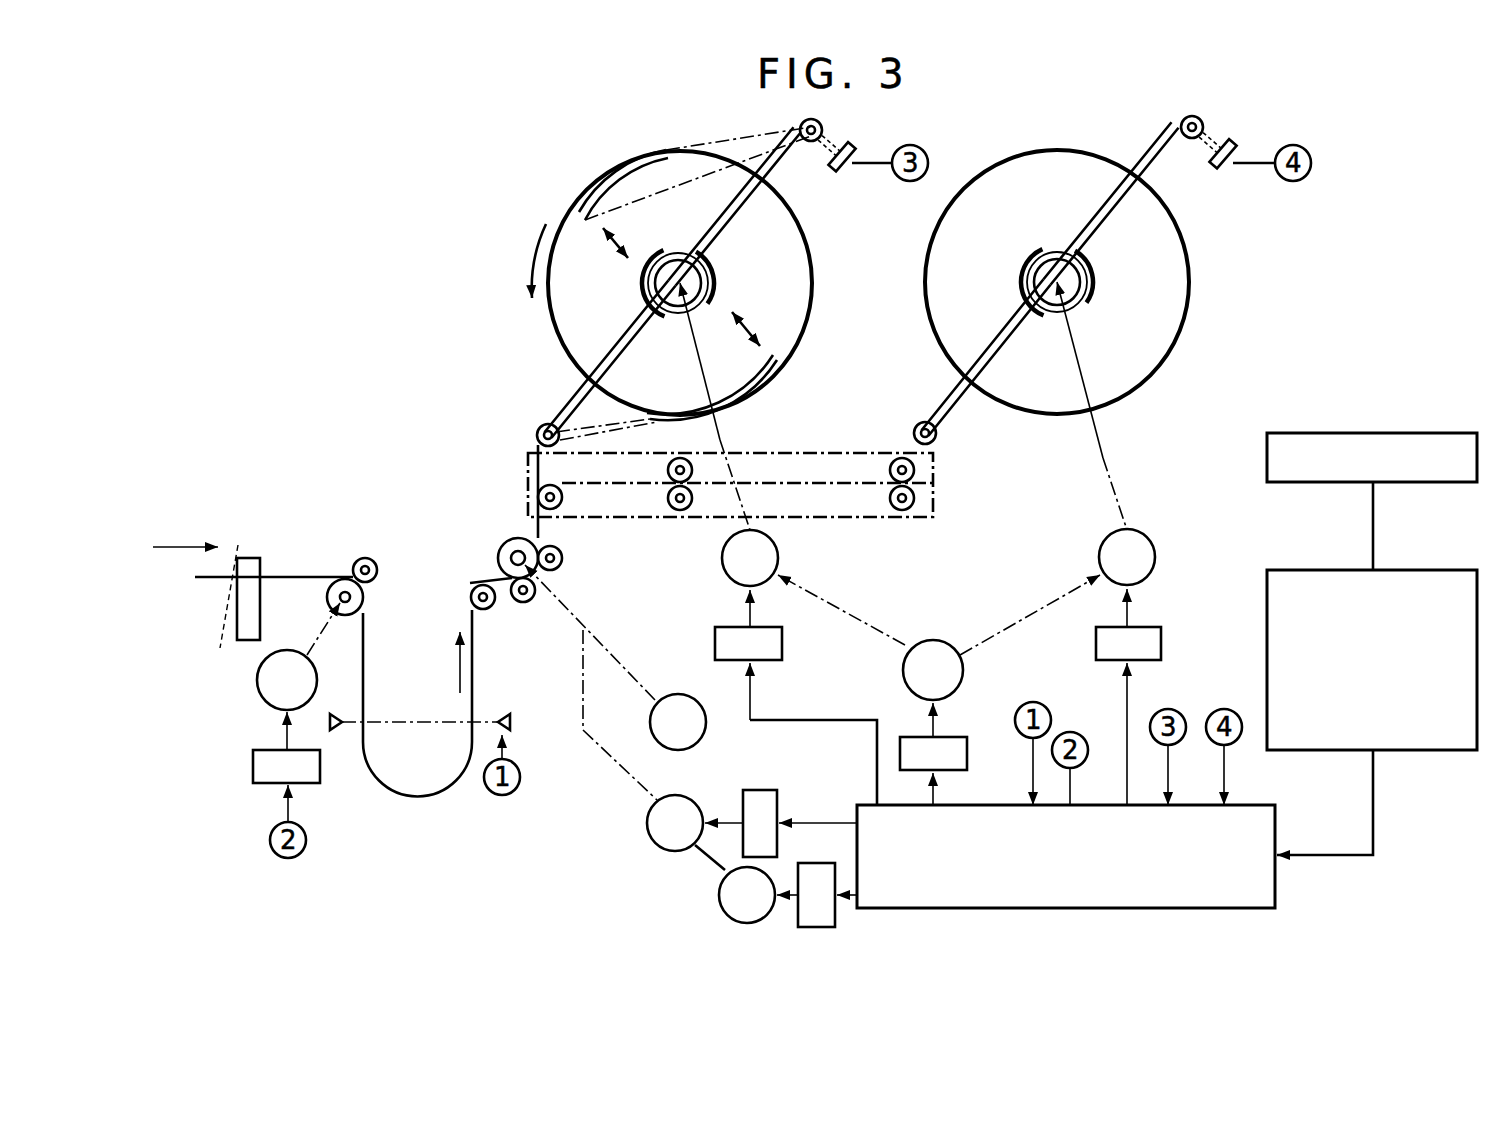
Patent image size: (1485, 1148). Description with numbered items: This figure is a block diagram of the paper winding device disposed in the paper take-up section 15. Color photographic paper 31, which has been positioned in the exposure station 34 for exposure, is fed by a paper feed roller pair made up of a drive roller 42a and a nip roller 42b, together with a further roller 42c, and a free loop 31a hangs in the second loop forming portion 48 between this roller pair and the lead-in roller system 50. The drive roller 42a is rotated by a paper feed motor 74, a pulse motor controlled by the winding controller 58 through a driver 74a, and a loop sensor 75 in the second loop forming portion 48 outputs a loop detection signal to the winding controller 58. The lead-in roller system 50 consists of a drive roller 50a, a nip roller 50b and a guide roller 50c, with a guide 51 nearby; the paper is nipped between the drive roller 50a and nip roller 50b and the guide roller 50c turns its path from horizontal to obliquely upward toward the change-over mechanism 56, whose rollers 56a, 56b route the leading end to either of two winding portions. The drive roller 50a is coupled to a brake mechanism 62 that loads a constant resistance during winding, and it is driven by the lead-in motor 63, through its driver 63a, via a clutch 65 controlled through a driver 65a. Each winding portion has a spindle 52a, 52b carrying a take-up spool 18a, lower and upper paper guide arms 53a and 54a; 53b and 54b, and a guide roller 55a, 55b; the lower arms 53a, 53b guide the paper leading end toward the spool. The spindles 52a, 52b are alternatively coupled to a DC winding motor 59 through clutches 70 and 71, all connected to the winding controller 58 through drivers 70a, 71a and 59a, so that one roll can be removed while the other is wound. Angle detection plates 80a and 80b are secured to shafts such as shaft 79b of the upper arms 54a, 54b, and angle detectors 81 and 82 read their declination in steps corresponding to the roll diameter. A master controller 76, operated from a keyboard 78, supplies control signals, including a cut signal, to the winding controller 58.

The paper take-up section 15 is at (556, 172).
The take-up spool 18a is at (668, 258).
The color photographic paper 31 is at (300, 575).
The free loop 31a is at (418, 800).
The exposure station 34 is at (245, 555).
The drive roller 42a is at (360, 615).
The nip roller 42b is at (455, 605).
The guide roller 42c is at (372, 552).
The second loop forming portion 48 is at (452, 812).
The lead-in roller system 50 is at (505, 508).
The drive roller 50a is at (500, 545).
The nip roller 50b is at (560, 568).
The guide roller 50c is at (522, 602).
The guide 51 is at (480, 582).
The spindle 52a is at (700, 283).
The spindle 52b is at (1077, 283).
The lower paper guide arm 53a is at (580, 395).
The lower paper guide arm 53b is at (958, 395).
The upper paper guide arm 54a is at (778, 175).
The upper paper guide arm 54b is at (1175, 172).
The guide roller 55a is at (538, 428).
The guide roller 55b is at (915, 428).
The change-over mechanism 56 is at (802, 448).
The transfer roller 56a is at (680, 510).
The transfer roller 56b is at (914, 500).
The winding controller 58 is at (1254, 899).
The DC winding motor 59 is at (934, 638).
The driver 59a is at (960, 737).
The brake mechanism 62 is at (706, 735).
The lead-in motor 63 is at (718, 897).
The motor driver 63a is at (836, 922).
The clutch 65 is at (646, 825).
The driver 65a is at (778, 795).
The clutch 70 is at (780, 555).
The driver 70a is at (714, 648).
The clutch 71 is at (1157, 555).
The driver 71a is at (1163, 645).
The paper feed motor 74 is at (256, 683).
The driver 74a is at (252, 768).
The loop sensor 75 is at (515, 722).
The master controller 76 is at (1408, 568).
The keyboard 78 is at (1374, 430).
The shaft 79b is at (800, 125).
The angle detection plate 80a is at (838, 150).
The angle detection plate 80b is at (1208, 150).
The angle detector 81 is at (868, 150).
The angle detector 82 is at (1248, 150).